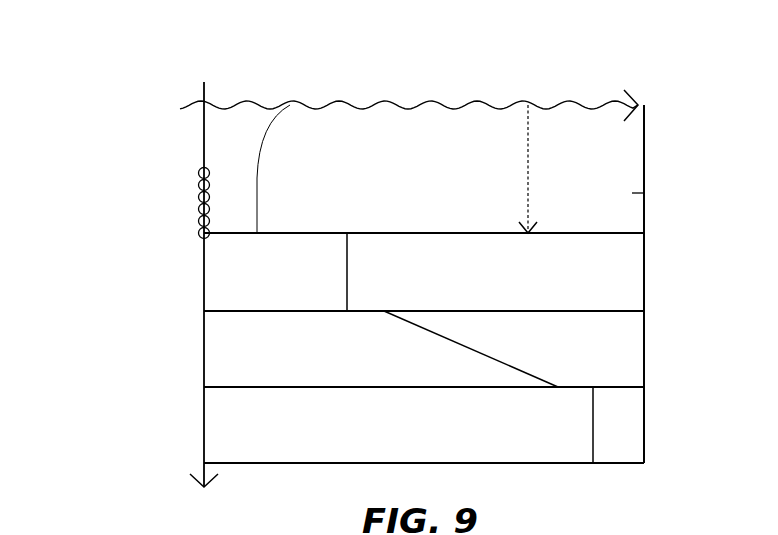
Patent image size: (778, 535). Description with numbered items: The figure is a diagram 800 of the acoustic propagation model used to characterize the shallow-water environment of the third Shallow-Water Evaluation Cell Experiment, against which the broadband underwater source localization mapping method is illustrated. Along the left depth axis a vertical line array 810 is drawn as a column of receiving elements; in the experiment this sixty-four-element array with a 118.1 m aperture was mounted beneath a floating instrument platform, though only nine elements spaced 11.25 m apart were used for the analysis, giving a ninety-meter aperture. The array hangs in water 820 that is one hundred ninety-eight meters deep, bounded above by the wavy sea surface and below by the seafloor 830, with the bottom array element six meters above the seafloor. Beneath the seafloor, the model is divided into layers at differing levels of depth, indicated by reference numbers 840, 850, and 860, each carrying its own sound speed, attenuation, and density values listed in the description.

The diagram 800 is at (199, 50).
The vertical line array 810 is at (198, 197).
The water 820 is at (644, 193).
The seafloor 830 is at (644, 233).
The depth level 840 is at (633, 274).
The depth level 850 is at (633, 352).
The depth level 860 is at (633, 428).